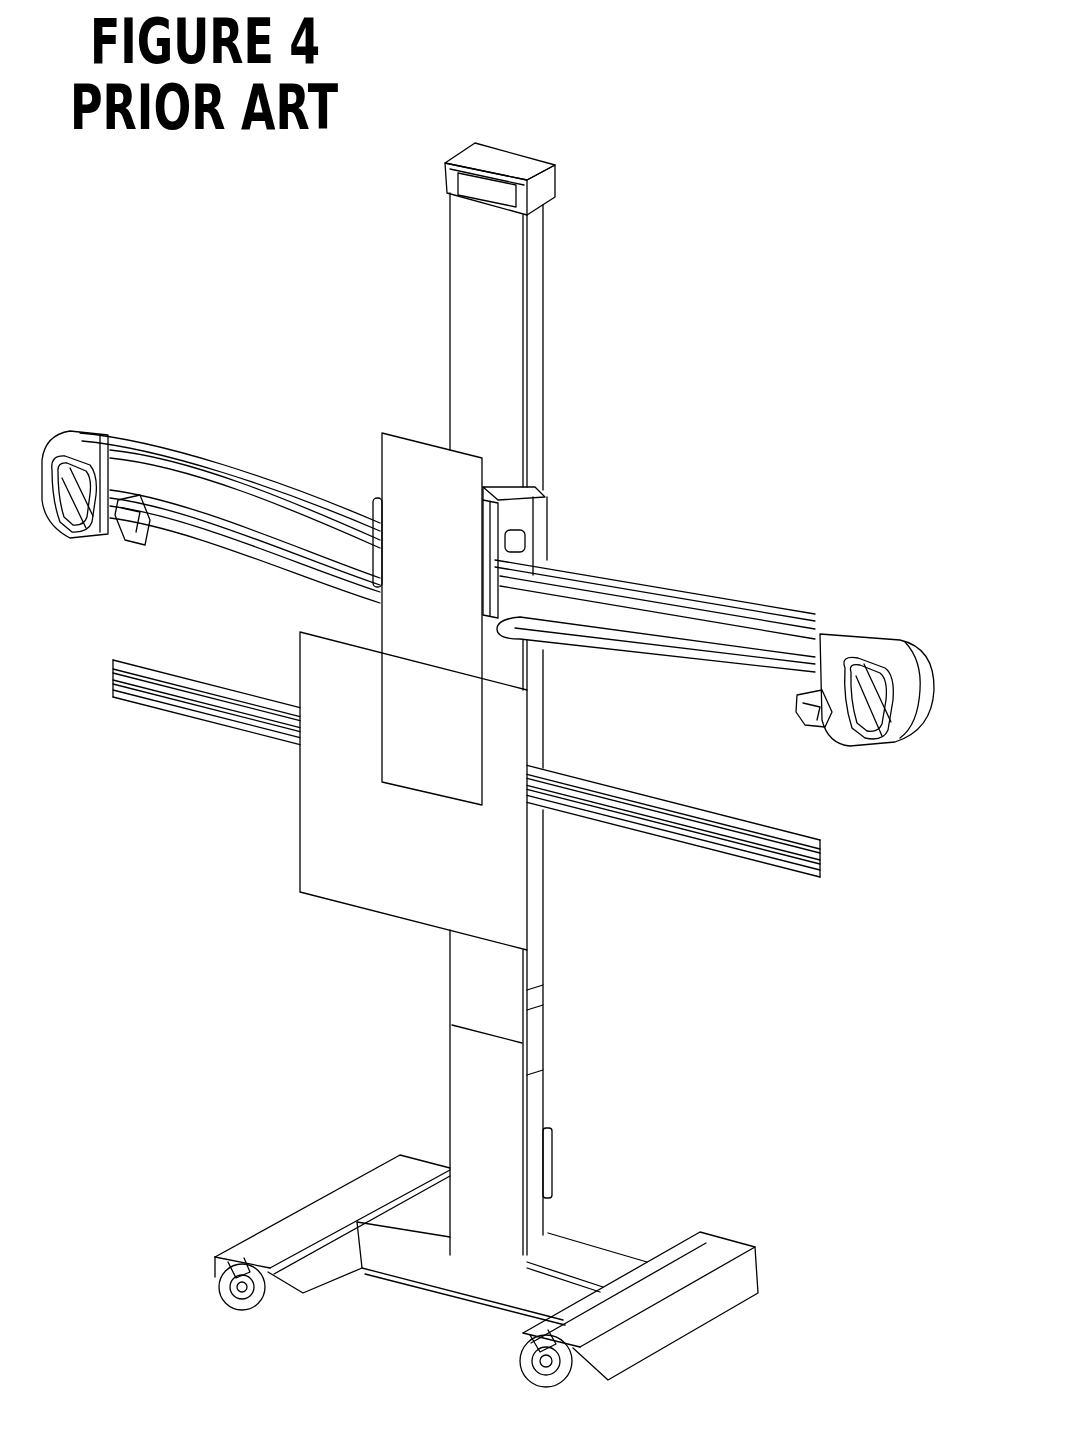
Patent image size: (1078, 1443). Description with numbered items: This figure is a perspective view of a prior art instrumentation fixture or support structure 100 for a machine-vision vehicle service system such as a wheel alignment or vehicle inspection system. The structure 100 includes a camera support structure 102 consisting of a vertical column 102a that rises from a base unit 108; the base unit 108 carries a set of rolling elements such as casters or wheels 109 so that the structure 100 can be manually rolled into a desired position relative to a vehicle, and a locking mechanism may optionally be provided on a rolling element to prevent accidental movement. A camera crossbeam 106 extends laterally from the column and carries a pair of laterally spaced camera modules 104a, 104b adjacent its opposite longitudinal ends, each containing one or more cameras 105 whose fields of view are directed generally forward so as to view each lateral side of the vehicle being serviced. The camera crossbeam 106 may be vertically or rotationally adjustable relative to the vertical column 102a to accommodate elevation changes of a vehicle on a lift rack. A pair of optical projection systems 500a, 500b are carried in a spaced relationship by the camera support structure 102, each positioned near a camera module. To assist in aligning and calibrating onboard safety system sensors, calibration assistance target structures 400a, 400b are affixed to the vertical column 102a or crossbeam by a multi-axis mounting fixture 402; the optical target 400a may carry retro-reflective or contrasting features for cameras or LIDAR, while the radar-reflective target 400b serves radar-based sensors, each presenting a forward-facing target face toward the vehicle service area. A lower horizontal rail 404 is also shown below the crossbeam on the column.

The instrumentation fixture or support structure 100 is at (487, 765).
The camera support structure 102 is at (534, 699).
The vertical column 102a is at (411, 341).
The camera module 104a is at (819, 650).
The camera module 104b is at (211, 489).
The camera 105 is at (466, 634).
The camera crossbeam 106 is at (655, 582).
The base unit 108 is at (446, 1267).
The casters or wheels 109 is at (328, 1322).
The target structure 400a is at (333, 791).
The target structure 400b is at (595, 800).
The multi-axis mounting fixture 402 is at (621, 518).
The rail 404 is at (466, 821).
The optical projection system 500a is at (737, 728).
The optical projection system 500b is at (200, 562).